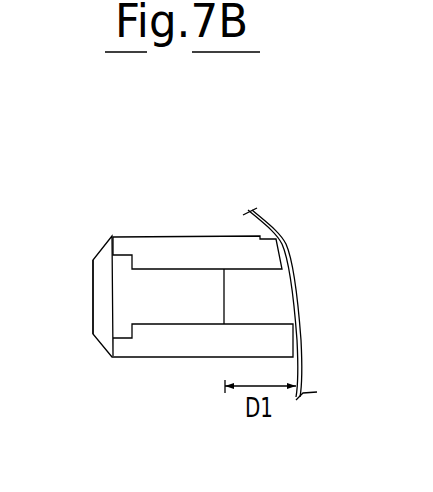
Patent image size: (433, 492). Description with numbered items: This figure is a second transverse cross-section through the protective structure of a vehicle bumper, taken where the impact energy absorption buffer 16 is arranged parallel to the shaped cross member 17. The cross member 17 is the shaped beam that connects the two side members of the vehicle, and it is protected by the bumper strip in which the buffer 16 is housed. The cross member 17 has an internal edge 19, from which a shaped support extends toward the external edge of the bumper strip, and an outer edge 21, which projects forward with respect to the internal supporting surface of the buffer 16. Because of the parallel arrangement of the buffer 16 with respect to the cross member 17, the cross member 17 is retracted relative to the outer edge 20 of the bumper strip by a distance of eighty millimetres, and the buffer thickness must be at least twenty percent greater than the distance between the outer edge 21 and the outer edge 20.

The impact energy absorption buffer 16 is at (166, 254).
The shaped cross member 17 is at (112, 303).
The internal edge of cross member 19 is at (92, 273).
The outer edge of bumper strip 20 is at (300, 287).
The outer edge of cross member 21 is at (230, 302).